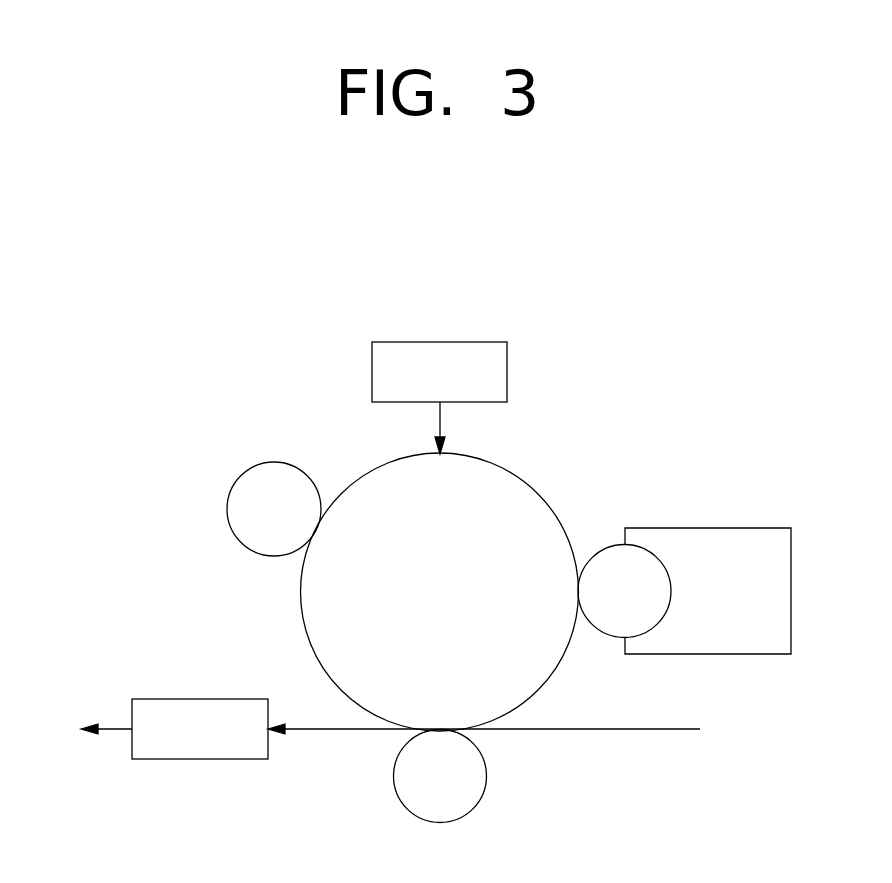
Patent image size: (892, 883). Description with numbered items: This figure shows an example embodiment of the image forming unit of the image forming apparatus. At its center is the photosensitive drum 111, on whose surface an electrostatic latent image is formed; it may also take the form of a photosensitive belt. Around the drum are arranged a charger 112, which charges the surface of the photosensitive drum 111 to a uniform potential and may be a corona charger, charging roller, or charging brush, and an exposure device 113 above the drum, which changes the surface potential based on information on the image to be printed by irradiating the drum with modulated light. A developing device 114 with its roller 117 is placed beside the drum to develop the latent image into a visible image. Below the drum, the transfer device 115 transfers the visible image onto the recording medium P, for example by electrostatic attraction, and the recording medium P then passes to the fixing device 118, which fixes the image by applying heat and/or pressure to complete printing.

The photosensitive drum 111 is at (505, 470).
The charger 112 is at (275, 462).
The exposure device 113 is at (440, 342).
The developing device 114 is at (706, 527).
The transfer device 115 is at (488, 772).
The developing roller 117 is at (593, 552).
The fixing device 118 is at (200, 699).
The recording medium P is at (313, 735).